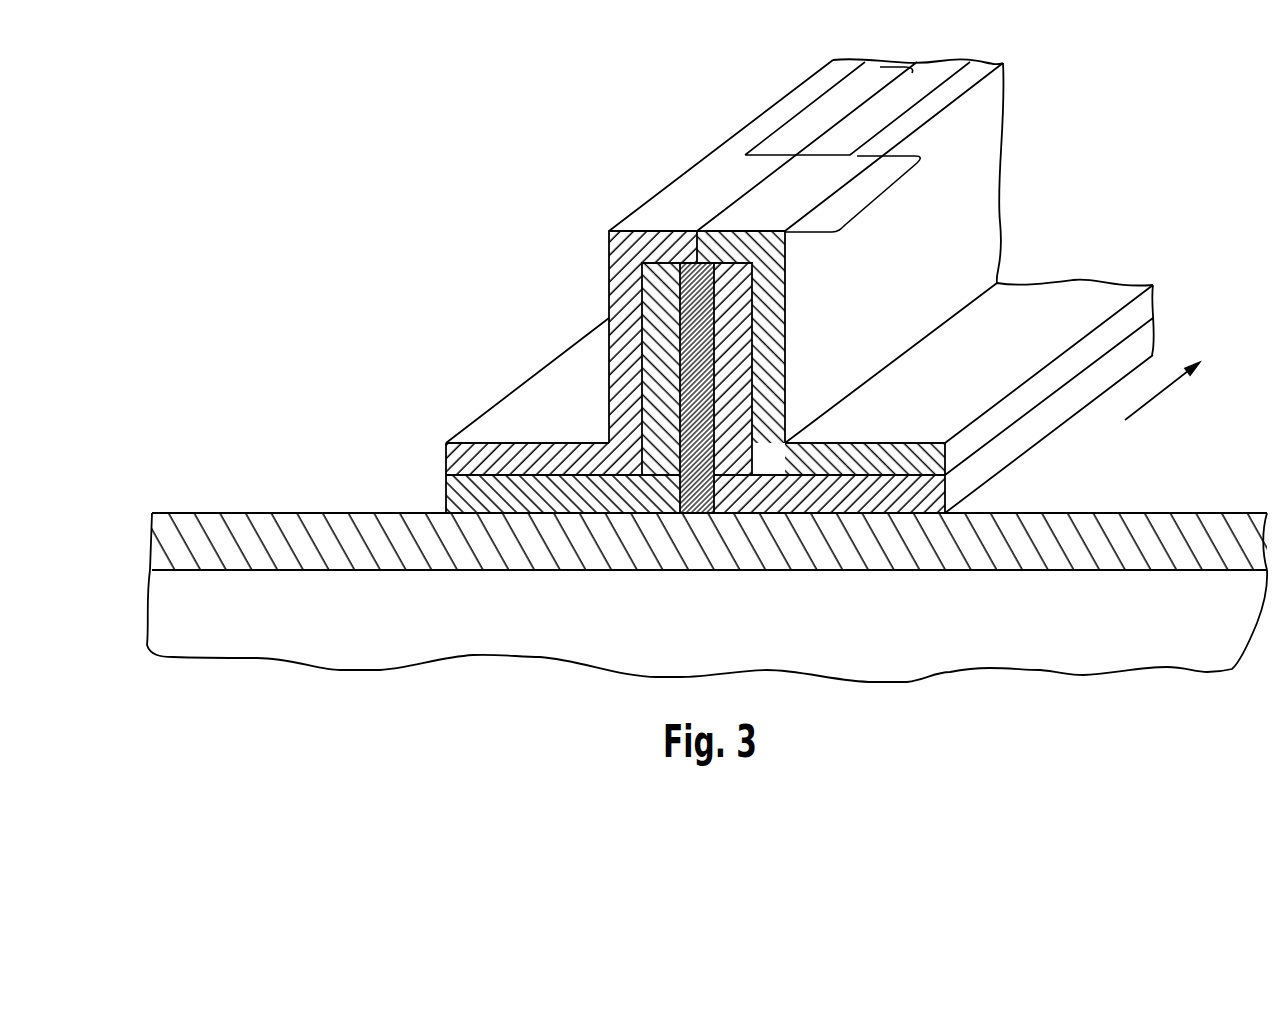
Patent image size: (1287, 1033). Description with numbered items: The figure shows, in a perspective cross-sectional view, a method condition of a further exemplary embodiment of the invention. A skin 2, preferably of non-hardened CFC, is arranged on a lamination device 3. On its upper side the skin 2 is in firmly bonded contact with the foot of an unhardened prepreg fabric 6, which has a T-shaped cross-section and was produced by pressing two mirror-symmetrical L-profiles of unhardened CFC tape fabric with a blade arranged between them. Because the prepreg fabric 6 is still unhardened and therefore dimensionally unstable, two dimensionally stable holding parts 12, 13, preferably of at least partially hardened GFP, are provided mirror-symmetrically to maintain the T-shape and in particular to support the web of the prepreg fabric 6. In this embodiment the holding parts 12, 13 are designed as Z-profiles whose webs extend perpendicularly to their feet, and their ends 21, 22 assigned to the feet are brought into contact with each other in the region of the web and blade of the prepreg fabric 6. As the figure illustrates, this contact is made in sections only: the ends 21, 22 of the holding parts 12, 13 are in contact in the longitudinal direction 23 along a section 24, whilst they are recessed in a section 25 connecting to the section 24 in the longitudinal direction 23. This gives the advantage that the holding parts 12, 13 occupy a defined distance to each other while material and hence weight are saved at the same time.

The skin 2 is at (1137, 528).
The lamination device 3 is at (689, 636).
The unhardened prepreg fabric 6 is at (650, 240).
The holding part 12 is at (545, 412).
The holding part 13 is at (1072, 302).
The end of holding part 21 is at (685, 242).
The end of holding part 22 is at (714, 248).
The longitudinal direction 23 is at (1150, 398).
The section 24 is at (882, 195).
The section 25 is at (873, 113).